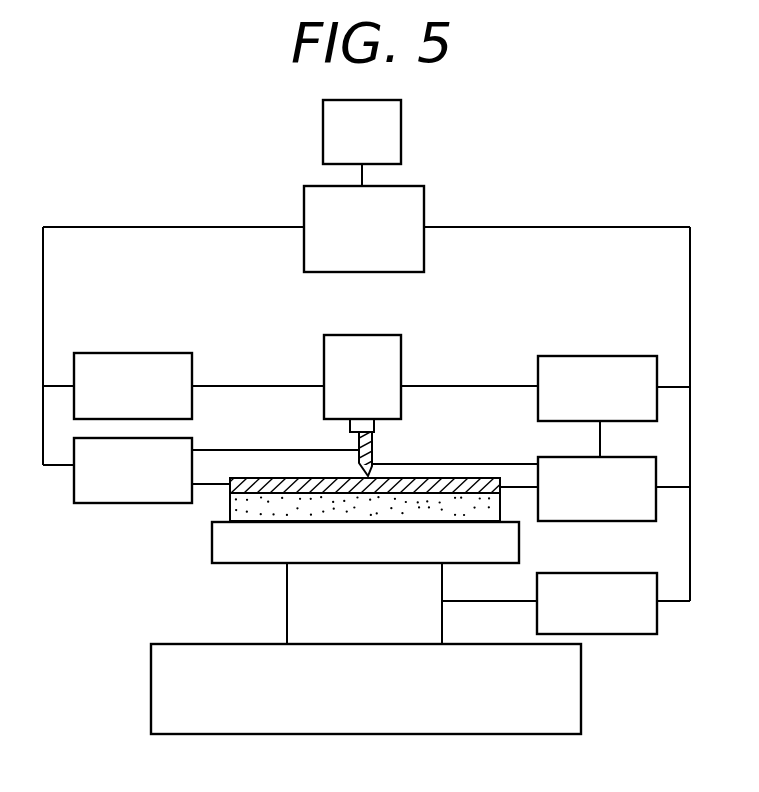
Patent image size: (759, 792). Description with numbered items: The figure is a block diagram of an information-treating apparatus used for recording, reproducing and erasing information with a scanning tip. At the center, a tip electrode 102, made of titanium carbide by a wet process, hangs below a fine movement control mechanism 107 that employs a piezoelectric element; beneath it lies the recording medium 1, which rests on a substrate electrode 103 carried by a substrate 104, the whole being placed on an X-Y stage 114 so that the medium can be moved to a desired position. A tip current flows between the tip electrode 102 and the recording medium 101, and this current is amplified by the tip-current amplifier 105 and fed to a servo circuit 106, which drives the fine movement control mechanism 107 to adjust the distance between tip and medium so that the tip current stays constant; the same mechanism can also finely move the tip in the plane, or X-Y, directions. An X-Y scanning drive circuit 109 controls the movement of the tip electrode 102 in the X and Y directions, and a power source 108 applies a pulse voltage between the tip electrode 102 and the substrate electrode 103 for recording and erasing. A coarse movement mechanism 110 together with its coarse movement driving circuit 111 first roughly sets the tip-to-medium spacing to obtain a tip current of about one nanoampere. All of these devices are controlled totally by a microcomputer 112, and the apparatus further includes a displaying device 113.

The recording medium 1 is at (513, 503).
The recording medium 101 is at (481, 478).
The tip electrode 102 is at (373, 446).
The substrate electrode 103 is at (252, 478).
The substrate 104 is at (230, 505).
The tip-current amplifier 105 is at (635, 521).
The servo circuit 106 is at (635, 356).
The fine movement control mechanism 107 is at (401, 349).
The power source 108 is at (110, 504).
The X-Y scanning drive circuit 109 is at (165, 353).
The coarse movement mechanism 110 is at (287, 609).
The coarse movement driving circuit 111 is at (622, 634).
The microcomputer 112 is at (424, 200).
The displaying device 113 is at (401, 113).
The X-Y stage 114 is at (581, 707).